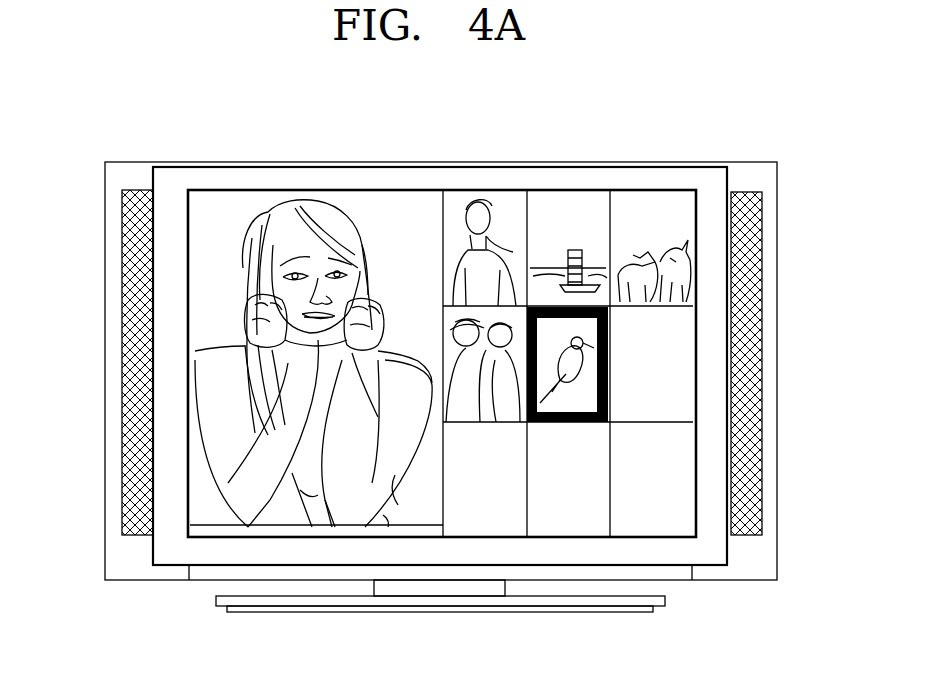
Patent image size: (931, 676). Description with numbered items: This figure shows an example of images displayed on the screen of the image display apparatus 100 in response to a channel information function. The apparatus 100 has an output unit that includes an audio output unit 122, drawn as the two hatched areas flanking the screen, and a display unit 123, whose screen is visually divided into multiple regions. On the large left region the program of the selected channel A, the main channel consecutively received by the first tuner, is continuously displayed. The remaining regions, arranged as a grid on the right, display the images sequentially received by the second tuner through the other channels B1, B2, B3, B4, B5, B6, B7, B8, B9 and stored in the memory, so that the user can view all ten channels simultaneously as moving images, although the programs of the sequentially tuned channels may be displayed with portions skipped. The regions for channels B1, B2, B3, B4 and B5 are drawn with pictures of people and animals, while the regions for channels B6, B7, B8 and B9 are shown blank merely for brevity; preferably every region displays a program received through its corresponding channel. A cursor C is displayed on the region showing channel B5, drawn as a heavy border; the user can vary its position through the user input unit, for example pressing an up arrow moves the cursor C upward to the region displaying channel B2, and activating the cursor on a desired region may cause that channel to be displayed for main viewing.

The image display apparatus 100 is at (131, 148).
The audio output unit 122 is at (130, 252).
The display unit 123 is at (241, 188).
The selected channel A is at (362, 197).
The channel B1 is at (500, 200).
The channel B2 is at (568, 200).
The channel B3 is at (652, 200).
The channel B4 is at (447, 322).
The channel B5 is at (587, 369).
The channel B6 is at (680, 407).
The channel B7 is at (483, 520).
The channel B8 is at (570, 520).
The channel B9 is at (645, 520).
The cursor C is at (608, 333).